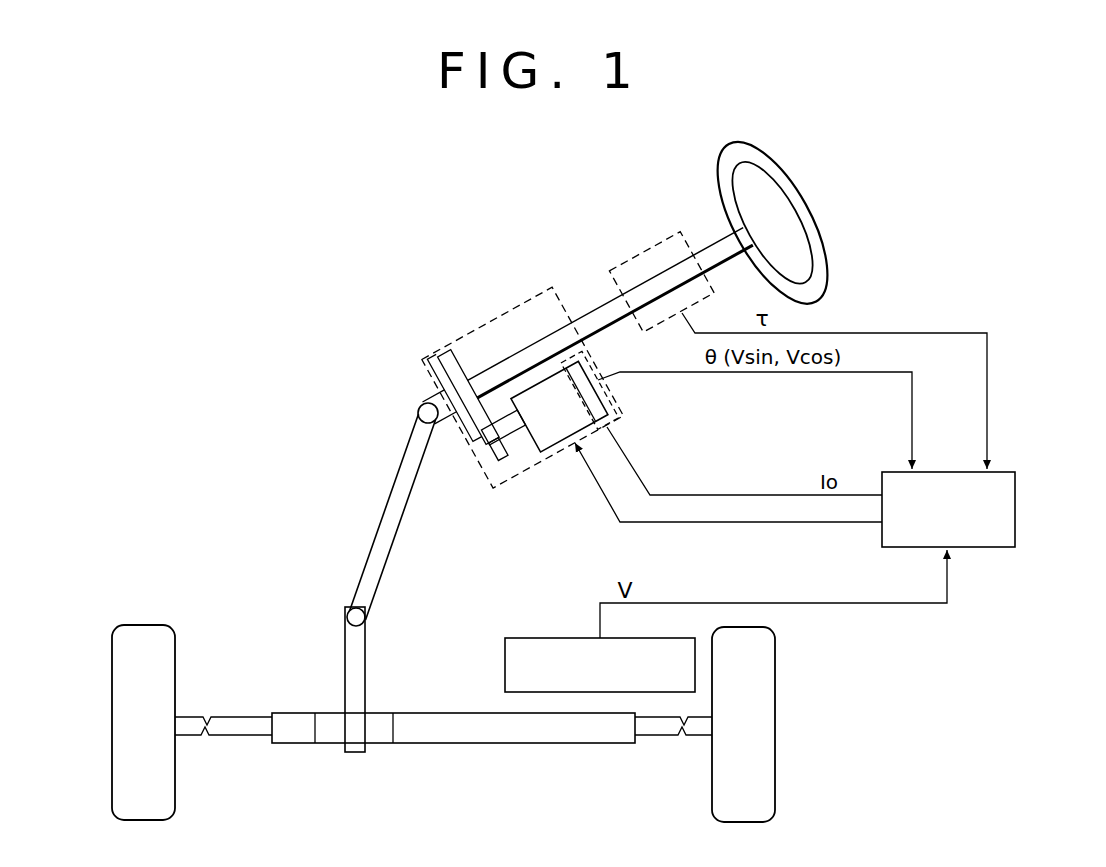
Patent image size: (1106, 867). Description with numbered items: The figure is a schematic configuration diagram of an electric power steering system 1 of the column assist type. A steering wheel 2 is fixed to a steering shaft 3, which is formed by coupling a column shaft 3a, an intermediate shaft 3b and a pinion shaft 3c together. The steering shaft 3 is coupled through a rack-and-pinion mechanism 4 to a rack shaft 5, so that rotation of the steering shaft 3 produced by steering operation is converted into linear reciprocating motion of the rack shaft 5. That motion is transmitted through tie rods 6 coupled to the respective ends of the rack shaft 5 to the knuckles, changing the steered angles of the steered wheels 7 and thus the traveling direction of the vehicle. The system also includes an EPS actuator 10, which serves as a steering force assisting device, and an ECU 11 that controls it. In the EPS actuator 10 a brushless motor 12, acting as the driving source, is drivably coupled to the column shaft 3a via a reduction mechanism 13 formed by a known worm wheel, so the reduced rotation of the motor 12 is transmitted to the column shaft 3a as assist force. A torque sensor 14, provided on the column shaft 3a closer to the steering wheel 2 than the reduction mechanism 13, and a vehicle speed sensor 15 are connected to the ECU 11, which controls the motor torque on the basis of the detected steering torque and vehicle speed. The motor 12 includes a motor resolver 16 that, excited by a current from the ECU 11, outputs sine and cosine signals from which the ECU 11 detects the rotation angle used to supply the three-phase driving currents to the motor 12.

The electric power steering system 1 is at (1000, 187).
The steering wheel 2 is at (824, 253).
The steering shaft 3 is at (354, 378).
The column shaft 3a is at (427, 403).
The intermediate shaft 3b is at (385, 505).
The pinion shaft 3c is at (345, 626).
The rack-and-pinion mechanism 4 is at (374, 717).
The rack shaft 5 is at (452, 713).
The tie rods 6 is at (233, 737).
The steered wheels 7 is at (147, 625).
The EPS actuator 10 is at (487, 318).
The ECU 11 is at (1017, 510).
The motor 12 is at (569, 424).
The reduction mechanism 13 is at (480, 458).
The torque sensor 14 is at (645, 247).
The vehicle speed sensor 15 is at (536, 638).
The motor resolver 16 is at (615, 398).